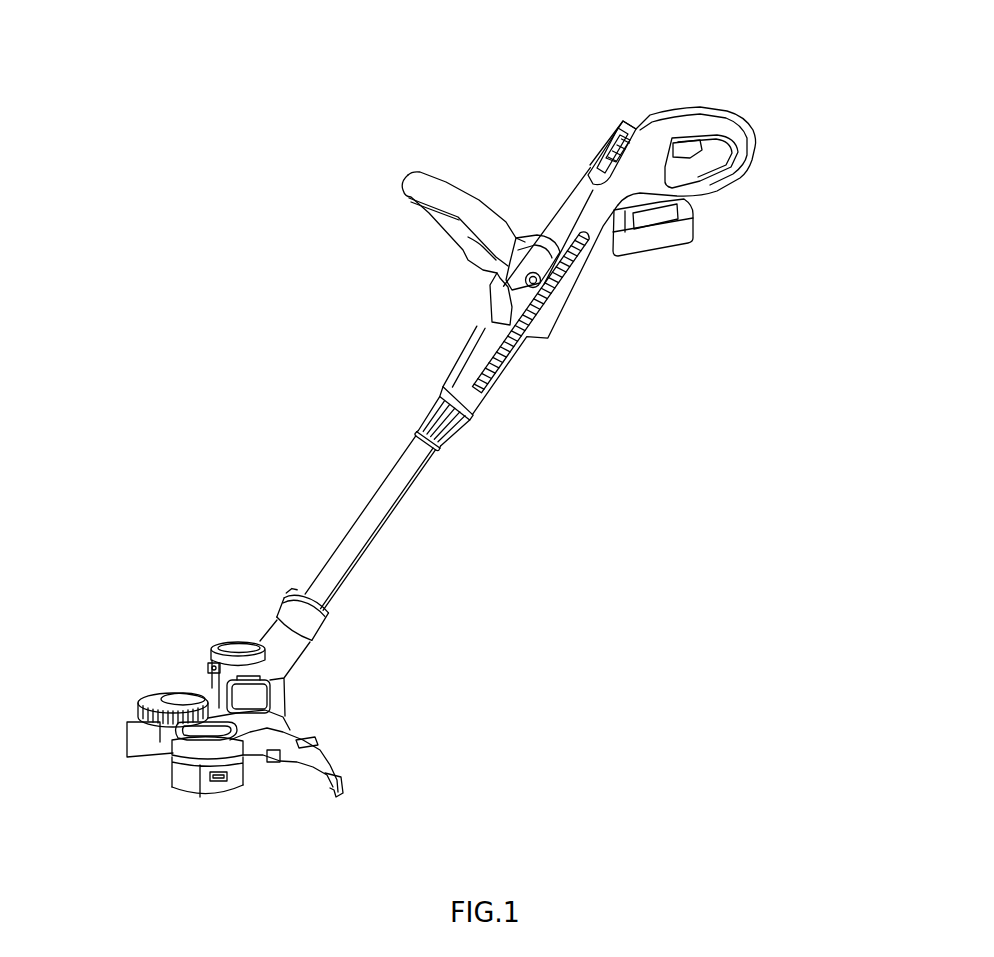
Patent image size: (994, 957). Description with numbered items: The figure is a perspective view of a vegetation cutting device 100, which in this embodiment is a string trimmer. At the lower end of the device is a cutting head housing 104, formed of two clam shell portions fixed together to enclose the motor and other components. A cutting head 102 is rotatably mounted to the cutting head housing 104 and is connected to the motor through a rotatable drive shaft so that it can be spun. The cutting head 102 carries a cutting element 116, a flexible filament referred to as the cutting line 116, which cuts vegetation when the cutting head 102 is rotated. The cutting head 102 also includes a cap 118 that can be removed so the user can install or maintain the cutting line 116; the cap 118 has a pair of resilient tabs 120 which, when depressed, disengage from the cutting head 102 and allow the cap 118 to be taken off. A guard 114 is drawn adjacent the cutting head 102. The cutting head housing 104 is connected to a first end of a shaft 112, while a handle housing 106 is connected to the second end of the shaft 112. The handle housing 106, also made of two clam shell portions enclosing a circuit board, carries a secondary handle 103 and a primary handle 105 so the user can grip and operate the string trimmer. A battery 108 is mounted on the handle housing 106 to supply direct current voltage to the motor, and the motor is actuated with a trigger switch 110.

The vegetation cutting device 100 is at (437, 448).
The cutting head 102 is at (170, 767).
The secondary handle 103 is at (410, 182).
The cutting head housing 104 is at (262, 633).
The primary handle 105 is at (733, 117).
The handle housing 106 is at (565, 212).
The battery 108 is at (675, 248).
The trigger switch 110 is at (690, 150).
The shaft 112 is at (412, 483).
The guard 114 is at (323, 743).
The cutting line 116 is at (143, 792).
The cap 118 is at (230, 793).
The resilient tabs 120 is at (217, 782).